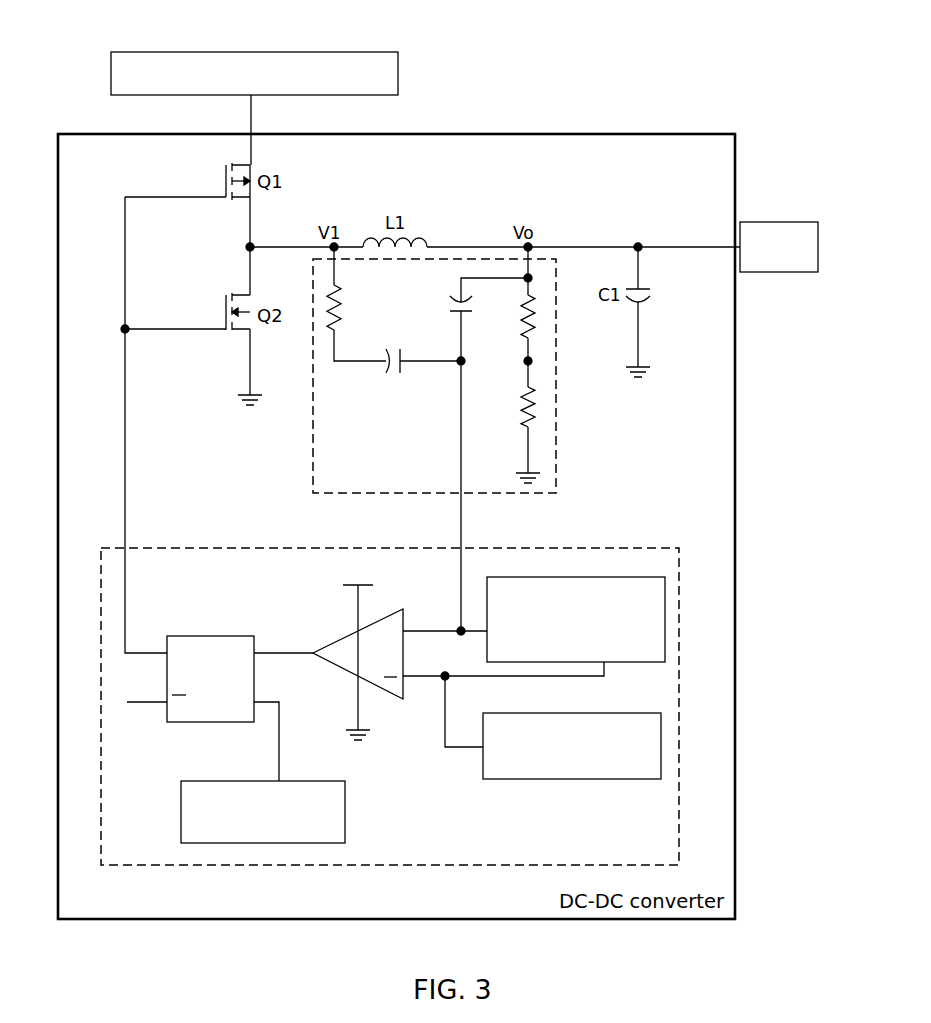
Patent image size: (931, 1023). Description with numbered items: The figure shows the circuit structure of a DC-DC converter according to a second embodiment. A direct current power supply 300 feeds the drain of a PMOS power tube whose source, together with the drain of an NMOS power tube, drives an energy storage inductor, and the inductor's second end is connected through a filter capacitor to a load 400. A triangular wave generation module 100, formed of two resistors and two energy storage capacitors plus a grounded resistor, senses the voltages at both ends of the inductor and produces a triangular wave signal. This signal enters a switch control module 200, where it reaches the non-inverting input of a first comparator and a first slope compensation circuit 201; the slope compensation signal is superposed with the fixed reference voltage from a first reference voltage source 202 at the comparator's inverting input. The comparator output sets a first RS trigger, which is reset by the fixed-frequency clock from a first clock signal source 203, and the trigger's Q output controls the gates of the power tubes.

The triangular wave generation module 100 is at (556, 421).
The switch control module 200 is at (610, 548).
The first slope compensation circuit 201 is at (604, 580).
The first reference voltage source 202 is at (610, 713).
The first clock signal source 203 is at (305, 781).
The direct current power supply 300 is at (252, 52).
The load 400 is at (778, 222).